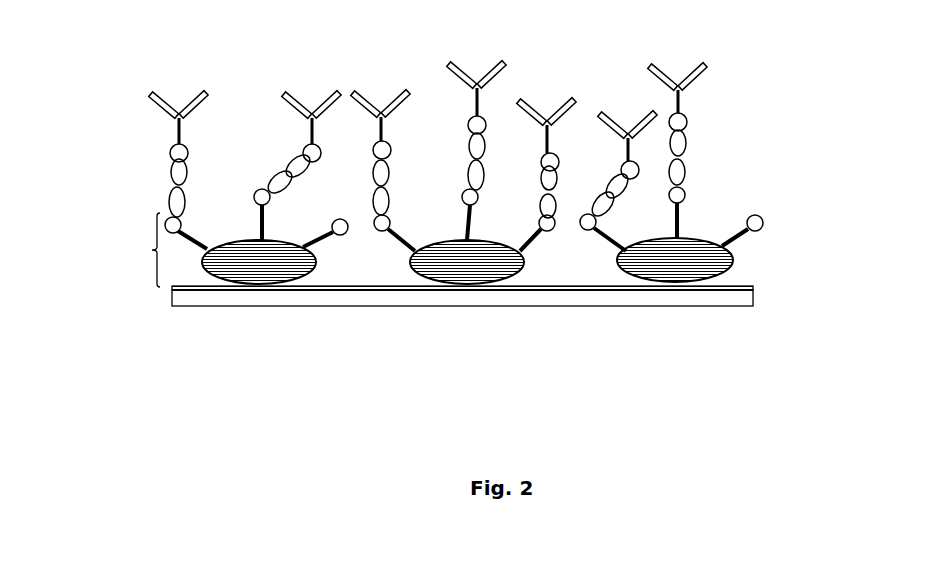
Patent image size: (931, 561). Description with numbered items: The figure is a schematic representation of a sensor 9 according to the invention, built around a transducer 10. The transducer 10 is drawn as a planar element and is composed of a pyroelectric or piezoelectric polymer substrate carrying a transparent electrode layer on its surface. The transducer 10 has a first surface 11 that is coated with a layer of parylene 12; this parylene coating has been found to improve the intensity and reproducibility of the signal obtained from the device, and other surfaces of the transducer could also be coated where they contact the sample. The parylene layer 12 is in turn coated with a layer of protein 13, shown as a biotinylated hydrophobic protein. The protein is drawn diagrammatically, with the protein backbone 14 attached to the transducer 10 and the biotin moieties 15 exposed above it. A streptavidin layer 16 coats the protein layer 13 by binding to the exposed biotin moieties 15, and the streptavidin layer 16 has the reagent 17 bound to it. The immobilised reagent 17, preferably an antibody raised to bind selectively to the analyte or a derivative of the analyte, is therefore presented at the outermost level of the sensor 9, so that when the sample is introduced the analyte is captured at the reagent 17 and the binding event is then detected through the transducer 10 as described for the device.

The sensor 9 is at (483, 348).
The transducer 10 is at (687, 295).
The first surface 11 is at (753, 288).
The layer of parylene 12 is at (733, 285).
The layer of protein 13 is at (124, 250).
The protein backbone 14 is at (732, 255).
The biotin moieties 15 is at (757, 214).
The streptavidin layer 16 is at (162, 185).
The reagent 17 is at (155, 93).